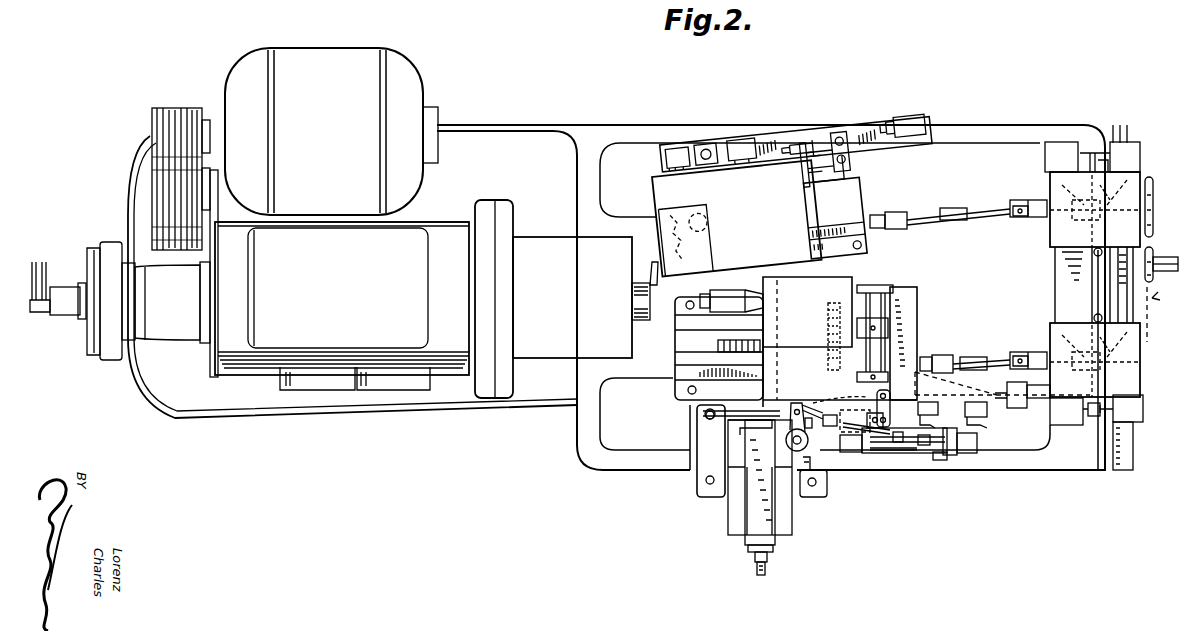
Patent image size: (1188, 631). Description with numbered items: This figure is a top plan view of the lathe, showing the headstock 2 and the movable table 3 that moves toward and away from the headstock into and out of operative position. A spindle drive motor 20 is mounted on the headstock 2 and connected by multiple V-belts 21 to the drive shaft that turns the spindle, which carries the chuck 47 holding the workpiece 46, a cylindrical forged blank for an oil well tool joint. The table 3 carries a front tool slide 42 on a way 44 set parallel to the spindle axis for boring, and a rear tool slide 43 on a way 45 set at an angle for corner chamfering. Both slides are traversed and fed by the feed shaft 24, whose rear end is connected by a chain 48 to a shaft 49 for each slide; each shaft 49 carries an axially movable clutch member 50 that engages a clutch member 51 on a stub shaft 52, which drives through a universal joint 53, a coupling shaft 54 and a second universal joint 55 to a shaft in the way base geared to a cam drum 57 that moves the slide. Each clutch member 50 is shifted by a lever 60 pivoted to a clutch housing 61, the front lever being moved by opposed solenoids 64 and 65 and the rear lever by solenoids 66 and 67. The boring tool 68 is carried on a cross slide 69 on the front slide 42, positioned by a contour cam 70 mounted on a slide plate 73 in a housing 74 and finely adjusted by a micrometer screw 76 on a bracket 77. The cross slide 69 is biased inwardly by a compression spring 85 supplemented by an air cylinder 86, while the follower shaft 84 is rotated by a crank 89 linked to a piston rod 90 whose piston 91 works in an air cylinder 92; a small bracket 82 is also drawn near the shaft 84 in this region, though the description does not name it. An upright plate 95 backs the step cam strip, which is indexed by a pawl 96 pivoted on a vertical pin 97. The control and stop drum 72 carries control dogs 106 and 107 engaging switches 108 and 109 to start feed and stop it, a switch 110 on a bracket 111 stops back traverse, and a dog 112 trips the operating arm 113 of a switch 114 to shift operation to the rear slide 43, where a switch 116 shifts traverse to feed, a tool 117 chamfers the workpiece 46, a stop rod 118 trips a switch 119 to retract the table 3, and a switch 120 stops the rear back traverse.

The headstock 2 is at (256, 366).
The table 3 is at (594, 477).
The spindle drive motor 20 is at (426, 70).
The V-belts 21 is at (158, 192).
The feed shaft 24 is at (1164, 257).
The front tool slide 42 is at (902, 300).
The rear tool slide 43 is at (655, 190).
The way 44 is at (686, 380).
The way 45 is at (858, 196).
The workpiece 46 is at (640, 322).
The chuck 47 is at (554, 360).
The chain 48 is at (1152, 300).
The shaft 49 is at (1143, 183).
The clutch member 50 is at (1125, 190).
The clutch member 51 is at (1048, 190).
The stub shaft 52 is at (1048, 220).
The universal joint 53 is at (1025, 220).
The coupling shaft 54 is at (973, 207).
The universal joint 55 is at (893, 213).
The cam drum 57 is at (720, 346).
The lever 60 is at (1090, 188).
The clutch housing 61 is at (1056, 242).
The solenoid 64 is at (1068, 426).
The solenoid 65 is at (1140, 420).
The solenoid 66 is at (1062, 144).
The solenoid 67 is at (1125, 142).
The boring tool 68 is at (708, 306).
The cross slide 69 is at (848, 270).
The contour cam 70 is at (743, 432).
The control and stop drum 72 is at (868, 455).
The slide plate 73 is at (752, 534).
The housing 74 is at (726, 516).
The micrometer screw 76 is at (760, 568).
The bracket 77 is at (772, 551).
The bracket 82 is at (822, 476).
The rotatable vertical shaft 84 is at (786, 444).
The compression spring 85 is at (826, 322).
The air cylinder 86 is at (876, 348).
The crank 89 is at (781, 416).
The piston rod 90 is at (822, 414).
The piston 91 is at (848, 445).
The air cylinder 92 is at (846, 412).
The upright plate 95 is at (736, 410).
The pawl 96 is at (824, 405).
The vertical pin 97 is at (884, 392).
The control dog 106 is at (896, 443).
The control dog 107 is at (924, 446).
The switch 108 is at (928, 404).
The switch 109 is at (980, 404).
The switch 110 is at (1017, 408).
The bracket 111 is at (1042, 398).
The dog 112 is at (941, 461).
The operating arm 113 is at (952, 456).
The switch 114 is at (972, 454).
The switch 116 is at (742, 146).
The tool 117 is at (650, 275).
The stop rod 118 is at (692, 173).
The switch 119 is at (676, 150).
The switch 120 is at (910, 126).